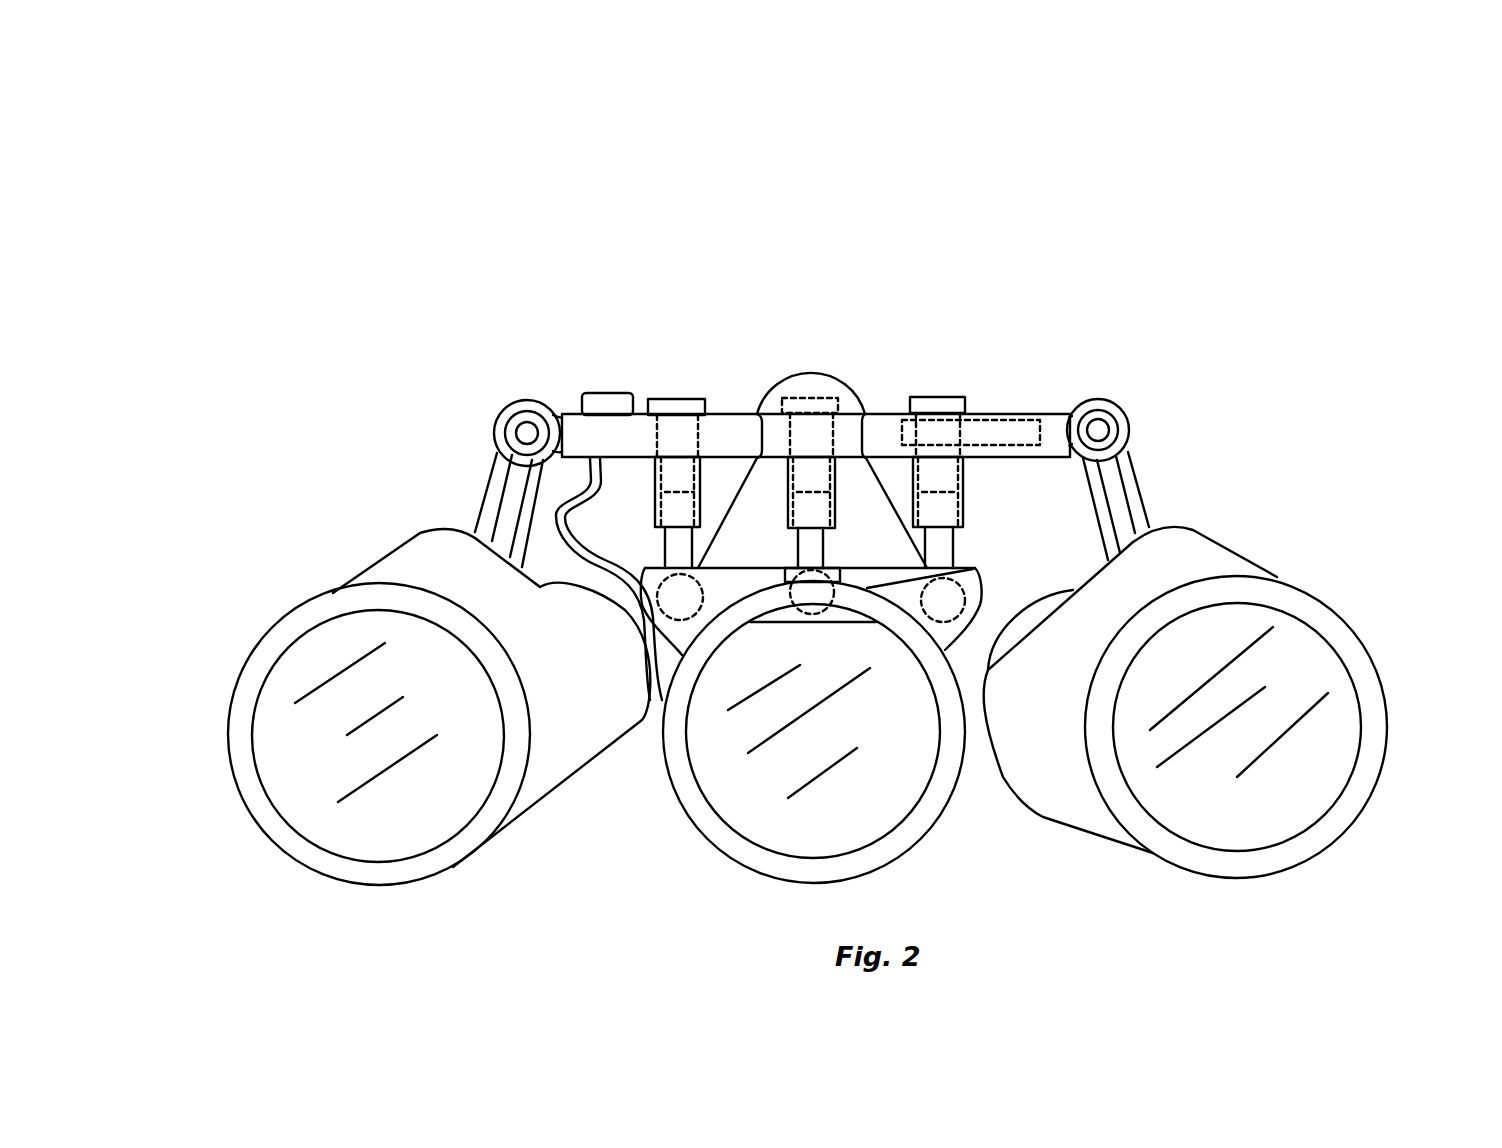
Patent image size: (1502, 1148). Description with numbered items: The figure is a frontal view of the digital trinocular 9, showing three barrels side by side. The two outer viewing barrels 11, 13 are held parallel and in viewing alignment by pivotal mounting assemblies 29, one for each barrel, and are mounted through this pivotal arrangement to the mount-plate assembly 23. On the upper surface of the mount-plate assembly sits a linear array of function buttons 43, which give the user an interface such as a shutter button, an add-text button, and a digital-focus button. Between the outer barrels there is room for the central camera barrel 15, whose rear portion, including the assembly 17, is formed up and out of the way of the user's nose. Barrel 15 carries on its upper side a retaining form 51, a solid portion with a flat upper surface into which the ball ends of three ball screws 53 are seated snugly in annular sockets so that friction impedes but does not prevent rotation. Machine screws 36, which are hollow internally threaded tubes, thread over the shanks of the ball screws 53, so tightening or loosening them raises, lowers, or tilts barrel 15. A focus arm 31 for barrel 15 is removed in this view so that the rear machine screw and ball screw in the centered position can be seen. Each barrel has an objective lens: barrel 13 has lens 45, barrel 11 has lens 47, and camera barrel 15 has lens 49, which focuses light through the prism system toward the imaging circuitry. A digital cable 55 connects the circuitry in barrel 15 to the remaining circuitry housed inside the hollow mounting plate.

The trinocular 9 is at (935, 290).
The barrel 11 is at (1283, 583).
The barrel 13 is at (318, 597).
The barrel 15 is at (962, 782).
The assembly 17 is at (758, 396).
The mount-plate assembly 23 is at (1004, 406).
The pivotal mounting assemblies 29 is at (1112, 430).
The focus arm 31 is at (494, 457).
The machine screws 36 is at (937, 397).
The function buttons 43 is at (611, 392).
The lens 45 is at (252, 743).
The lens 47 is at (1385, 735).
The lens 49 is at (685, 748).
The retaining form 51 is at (727, 588).
The ball screws 53 is at (950, 585).
The digital cable 55 is at (567, 555).